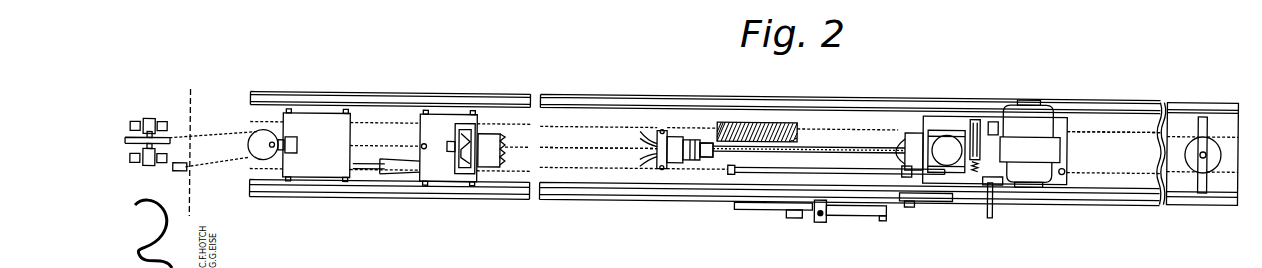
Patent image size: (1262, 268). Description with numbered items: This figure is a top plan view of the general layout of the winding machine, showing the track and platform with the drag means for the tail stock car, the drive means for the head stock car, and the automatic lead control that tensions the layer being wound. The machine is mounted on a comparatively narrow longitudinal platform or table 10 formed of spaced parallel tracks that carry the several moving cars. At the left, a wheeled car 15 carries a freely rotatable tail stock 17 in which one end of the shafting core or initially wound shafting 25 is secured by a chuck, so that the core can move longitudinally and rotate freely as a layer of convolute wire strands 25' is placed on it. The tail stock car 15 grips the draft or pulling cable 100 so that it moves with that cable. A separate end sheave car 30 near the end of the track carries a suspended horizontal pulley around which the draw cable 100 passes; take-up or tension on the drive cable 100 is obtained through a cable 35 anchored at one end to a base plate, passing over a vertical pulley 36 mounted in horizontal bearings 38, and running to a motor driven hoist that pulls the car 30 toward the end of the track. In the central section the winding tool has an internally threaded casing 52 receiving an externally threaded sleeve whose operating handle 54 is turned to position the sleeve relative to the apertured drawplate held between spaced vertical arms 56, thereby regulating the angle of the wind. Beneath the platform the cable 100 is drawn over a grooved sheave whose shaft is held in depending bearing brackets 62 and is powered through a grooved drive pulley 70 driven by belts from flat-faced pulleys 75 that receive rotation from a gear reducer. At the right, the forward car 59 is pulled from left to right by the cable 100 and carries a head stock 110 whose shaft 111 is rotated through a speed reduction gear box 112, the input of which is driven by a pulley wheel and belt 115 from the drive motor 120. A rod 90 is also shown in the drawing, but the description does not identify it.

The platform or table 10 is at (1222, 116).
The wheeled car 15 is at (442, 172).
The tail stock 17 is at (490, 131).
The shafting core or initially wound shafting 25 is at (599, 112).
The layer of convolute wire strands 25' is at (809, 114).
The end sheave car 30 is at (299, 144).
The cable 35 is at (200, 165).
The vertical pulley 36 is at (165, 128).
The horizontal bearings 38 is at (149, 120).
The internally threaded casing 52 is at (693, 133).
The operating handle 54 is at (713, 159).
The spaced vertical arms 56 is at (662, 126).
The forward car 59 is at (1060, 112).
The bearing brackets 62 is at (863, 210).
The grooved drive pulley 70 is at (743, 205).
The flat-faced pulleys 75 is at (840, 205).
The slide rod 90 is at (787, 168).
The draft or pulling cable 100 is at (1120, 127).
The head stock 110 is at (912, 139).
The shaft 111 is at (907, 171).
The speed reduction gear box 112 is at (948, 144).
The belt 115 is at (1010, 183).
The drive motor 120 is at (1027, 106).